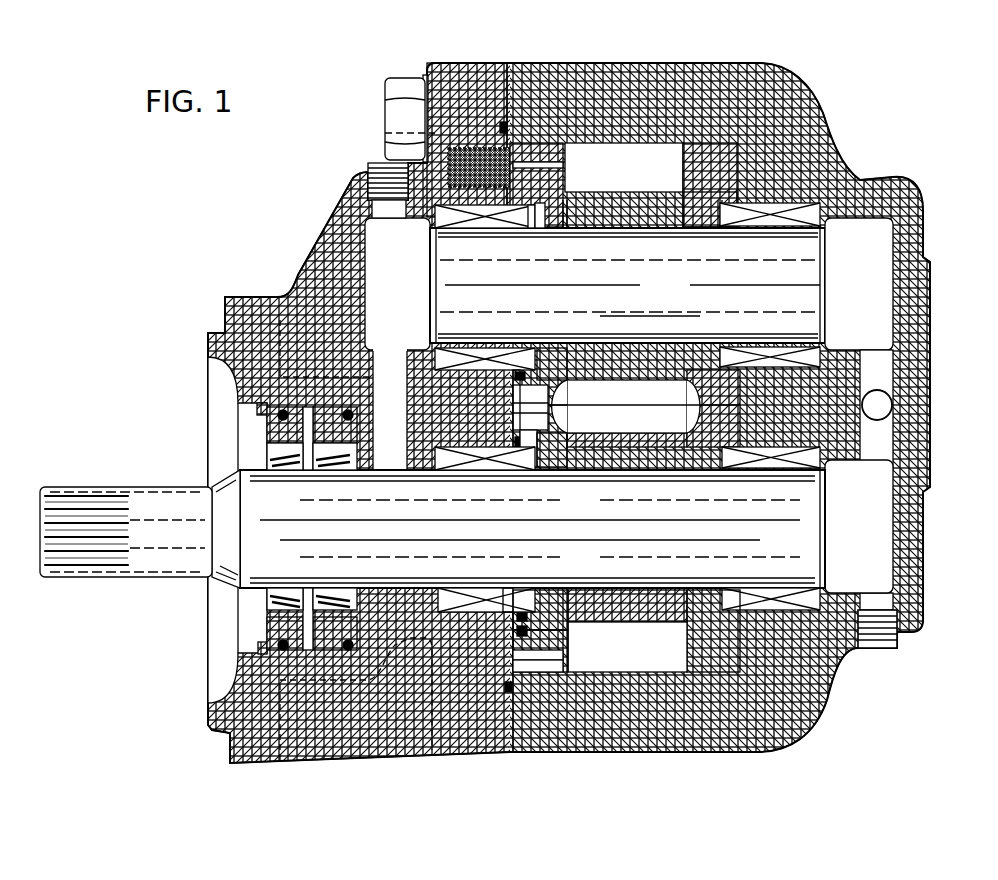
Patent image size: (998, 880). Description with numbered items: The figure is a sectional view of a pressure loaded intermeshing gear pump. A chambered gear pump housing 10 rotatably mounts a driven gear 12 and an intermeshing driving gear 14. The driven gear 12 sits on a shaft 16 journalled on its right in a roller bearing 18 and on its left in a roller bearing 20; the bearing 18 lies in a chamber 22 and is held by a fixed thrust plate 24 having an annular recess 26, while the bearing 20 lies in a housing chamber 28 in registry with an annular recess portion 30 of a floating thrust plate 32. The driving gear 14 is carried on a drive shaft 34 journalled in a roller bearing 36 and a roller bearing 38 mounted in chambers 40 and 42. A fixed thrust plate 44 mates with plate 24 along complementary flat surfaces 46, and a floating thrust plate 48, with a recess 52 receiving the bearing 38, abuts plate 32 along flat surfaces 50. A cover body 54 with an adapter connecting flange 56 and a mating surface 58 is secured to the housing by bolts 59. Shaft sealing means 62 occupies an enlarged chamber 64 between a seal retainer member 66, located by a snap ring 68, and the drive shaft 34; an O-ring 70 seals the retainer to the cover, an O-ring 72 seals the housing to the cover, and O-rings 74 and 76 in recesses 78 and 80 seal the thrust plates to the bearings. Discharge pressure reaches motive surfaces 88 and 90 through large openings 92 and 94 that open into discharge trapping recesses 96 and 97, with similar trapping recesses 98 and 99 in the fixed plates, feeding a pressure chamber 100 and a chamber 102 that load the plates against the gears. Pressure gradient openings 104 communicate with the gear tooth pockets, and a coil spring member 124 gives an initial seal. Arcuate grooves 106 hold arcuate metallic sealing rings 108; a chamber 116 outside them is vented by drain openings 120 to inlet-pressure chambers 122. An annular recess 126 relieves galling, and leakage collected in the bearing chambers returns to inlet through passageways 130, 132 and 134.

The gear pump housing 10 is at (801, 78).
The driven gear 12 is at (653, 183).
The driving gear 14 is at (620, 626).
The shaft 16 is at (650, 294).
The roller bearing 18 is at (768, 215).
The roller bearing 20 is at (450, 355).
The chamber 22 is at (883, 237).
The fixed thrust plate 24 is at (728, 163).
The annular recess 26 is at (733, 193).
The housing chamber 28 is at (368, 253).
The annular recess portion 30 is at (539, 210).
The floating thrust plate 32 is at (540, 147).
The drive shaft 34 is at (665, 531).
The roller bearing 36 is at (777, 457).
The roller bearing 38 is at (447, 462).
The chamber 40 is at (882, 521).
The chamber 42 is at (428, 592).
The fixed thrust plate 44 is at (702, 636).
The complementary flat surfaces 46 is at (740, 398).
The floating thrust plate 48 is at (568, 640).
The complementary flat surfaces 50 is at (520, 408).
The recess 52 is at (587, 467).
The cover body 54 is at (323, 230).
The adapter connecting flange 56 is at (242, 752).
The mating surface 58 is at (505, 88).
The bolts 59 is at (393, 112).
The shaft sealing means 62 is at (270, 444).
The enlarged chamber 64 is at (247, 423).
The seal retainer member 66 is at (288, 464).
The snap ring 68 is at (255, 405).
The O-ring 70 is at (375, 386).
The O-ring 72 is at (505, 127).
The O-ring 74 is at (529, 205).
The O-ring 76 is at (520, 453).
The recess 78 is at (527, 199).
The recess 80 is at (530, 450).
The motive surface 88 is at (504, 145).
The motive surface 90 is at (510, 660).
The opening 92 is at (532, 390).
The opening 94 is at (513, 448).
The discharge trapping recess 96 is at (567, 393).
The discharge trapping recess 97 is at (567, 419).
The trapping recess 98 is at (687, 394).
The trapping recess 99 is at (687, 419).
The pressure chamber 100 is at (508, 201).
The chamber 102 is at (508, 590).
The pressure gradient openings 104 is at (565, 165).
The arcuate grooves 106 is at (540, 635).
The arcuate metallic sealing rings 108 is at (523, 612).
The chamber 116 is at (510, 637).
The drain openings 120 is at (546, 672).
The chambers 122 is at (565, 657).
The coil spring member 124 is at (385, 133).
The annular recess 126 is at (566, 214).
The passageway 130 is at (618, 316).
The passageway 132 is at (884, 433).
The passageway 134 is at (882, 402).